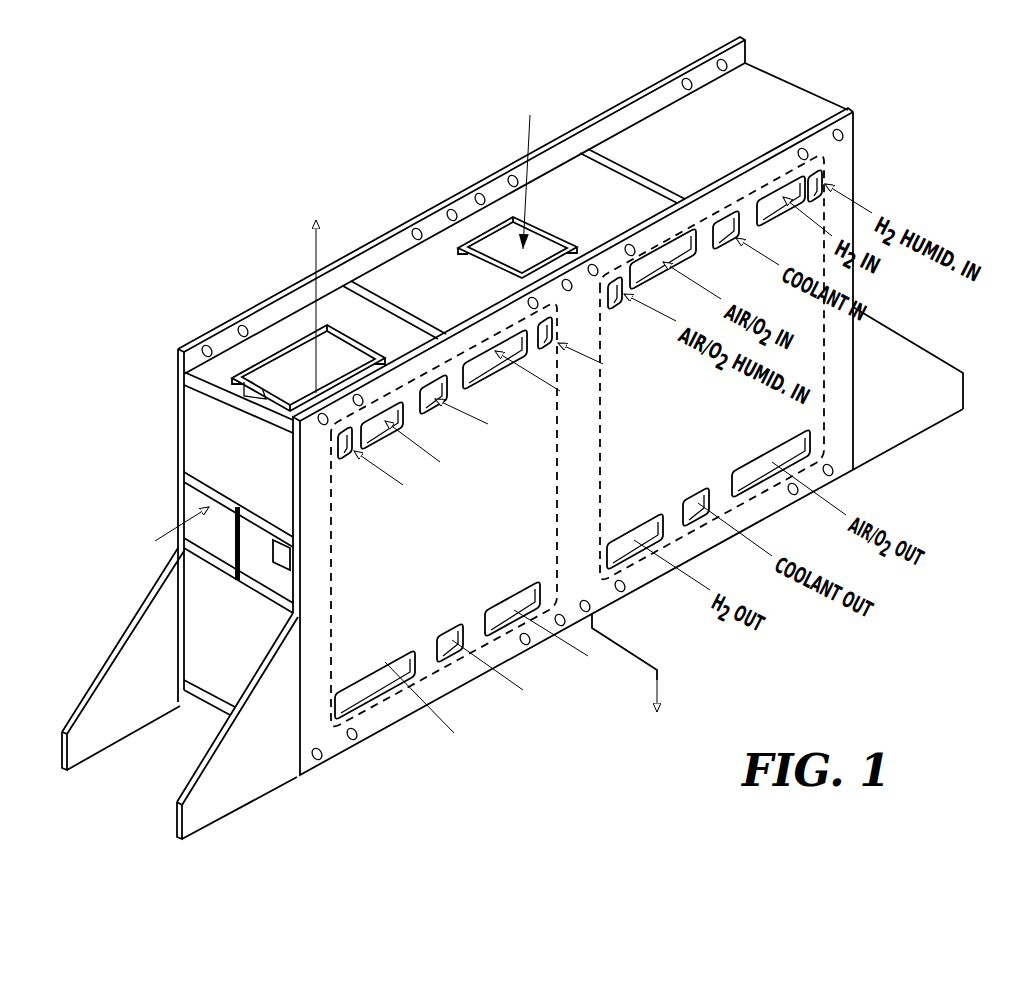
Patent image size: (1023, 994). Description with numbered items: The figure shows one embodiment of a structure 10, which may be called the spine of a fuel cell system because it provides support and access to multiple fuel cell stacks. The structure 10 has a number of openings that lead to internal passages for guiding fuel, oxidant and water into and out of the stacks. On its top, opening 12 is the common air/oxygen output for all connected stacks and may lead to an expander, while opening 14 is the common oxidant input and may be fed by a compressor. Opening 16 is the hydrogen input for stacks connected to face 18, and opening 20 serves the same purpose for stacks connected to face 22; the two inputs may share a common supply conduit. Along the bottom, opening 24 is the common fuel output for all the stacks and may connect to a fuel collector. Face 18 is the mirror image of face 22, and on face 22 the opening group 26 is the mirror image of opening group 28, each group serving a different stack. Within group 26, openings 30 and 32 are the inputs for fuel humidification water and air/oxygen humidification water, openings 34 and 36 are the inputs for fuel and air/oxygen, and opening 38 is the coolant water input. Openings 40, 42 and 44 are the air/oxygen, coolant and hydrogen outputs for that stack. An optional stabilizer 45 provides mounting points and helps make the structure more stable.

The structure 10 is at (963, 131).
The opening 12 is at (332, 369).
The opening 14 is at (512, 250).
The opening 16 is at (208, 502).
The face 18 is at (177, 446).
The opening 20 is at (272, 568).
The face 22 is at (323, 731).
The opening 24 is at (604, 621).
The opening group 26 is at (452, 667).
The opening group 28 is at (760, 497).
The opening 30 is at (349, 450).
The opening 32 is at (551, 345).
The opening 34 is at (375, 435).
The opening 36 is at (488, 373).
The opening 38 is at (438, 405).
The opening 40 is at (401, 681).
The opening 42 is at (458, 643).
The opening 44 is at (531, 601).
The stabilizer 45 is at (903, 416).